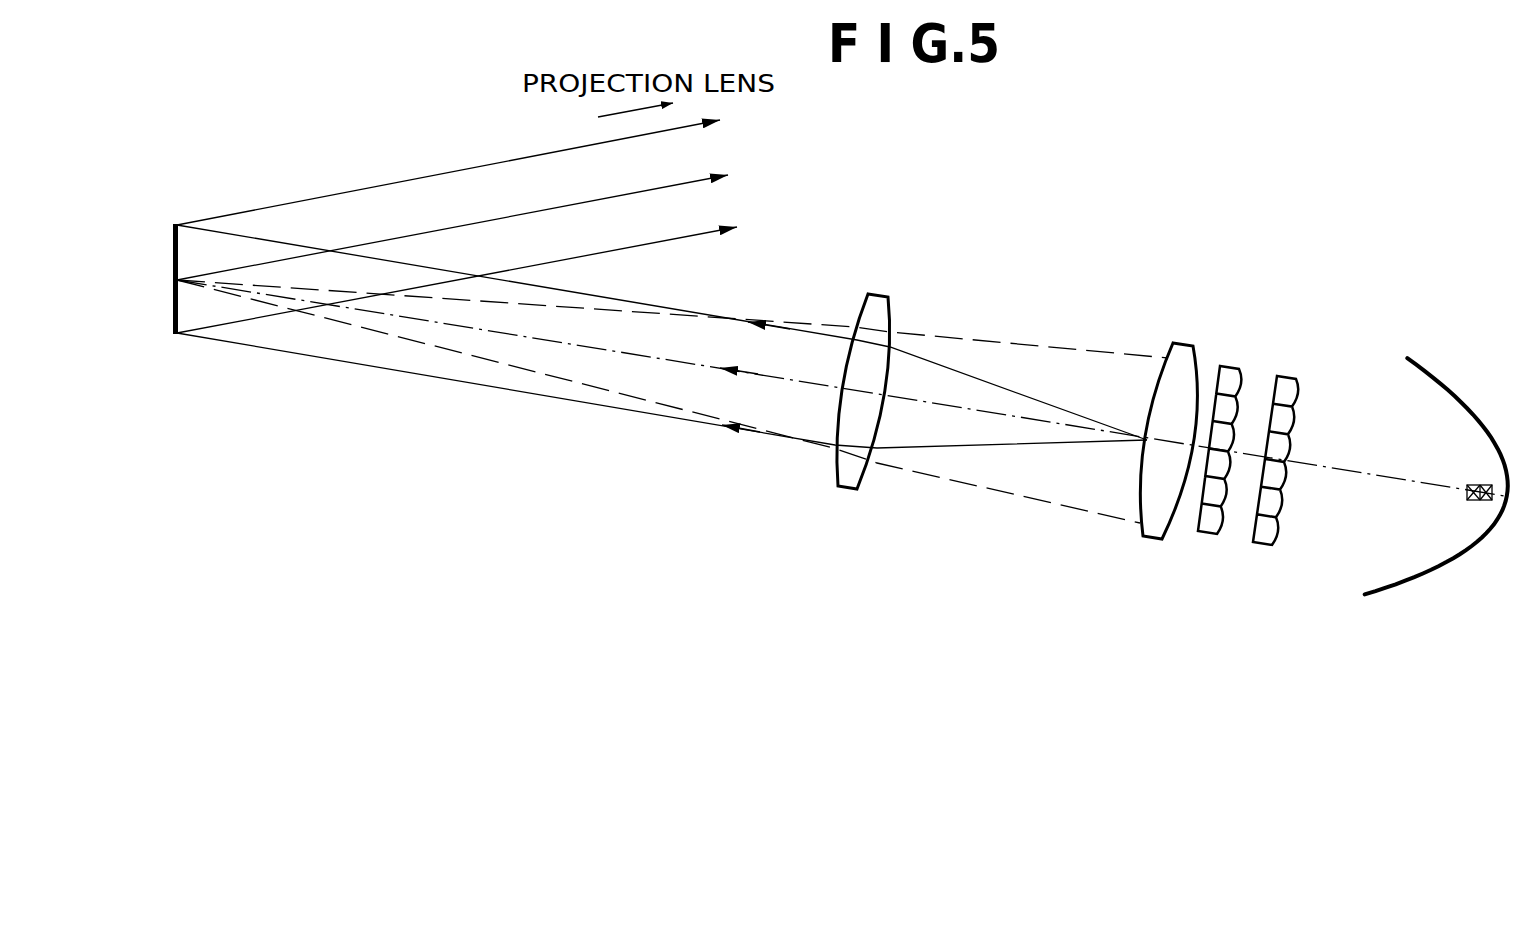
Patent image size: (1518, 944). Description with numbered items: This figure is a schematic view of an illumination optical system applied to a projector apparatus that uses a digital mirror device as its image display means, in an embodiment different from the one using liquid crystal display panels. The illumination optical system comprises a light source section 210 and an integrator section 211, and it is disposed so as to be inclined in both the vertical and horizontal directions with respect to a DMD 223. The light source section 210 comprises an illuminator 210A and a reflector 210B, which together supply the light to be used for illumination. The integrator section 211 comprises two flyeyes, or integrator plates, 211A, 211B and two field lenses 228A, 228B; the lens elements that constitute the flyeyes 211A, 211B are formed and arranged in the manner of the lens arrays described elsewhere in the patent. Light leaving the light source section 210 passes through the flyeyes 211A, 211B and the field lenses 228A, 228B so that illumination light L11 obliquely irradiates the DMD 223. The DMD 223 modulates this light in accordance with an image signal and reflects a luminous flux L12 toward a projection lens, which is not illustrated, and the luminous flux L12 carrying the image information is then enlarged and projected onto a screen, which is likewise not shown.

The light source section 210 is at (1411, 445).
The illuminator 210A is at (1477, 486).
The reflector 210B is at (1366, 596).
The integrator section 211 is at (1266, 389).
The flyeye (integrator plate) 211A is at (1294, 376).
The flyeye (integrator plate) 211B is at (1236, 367).
The field lens 228A is at (1150, 540).
The field lens 228B is at (856, 490).
The DMD 223 is at (178, 312).
The illumination light L11 is at (714, 328).
The luminous flux L12 is at (432, 186).